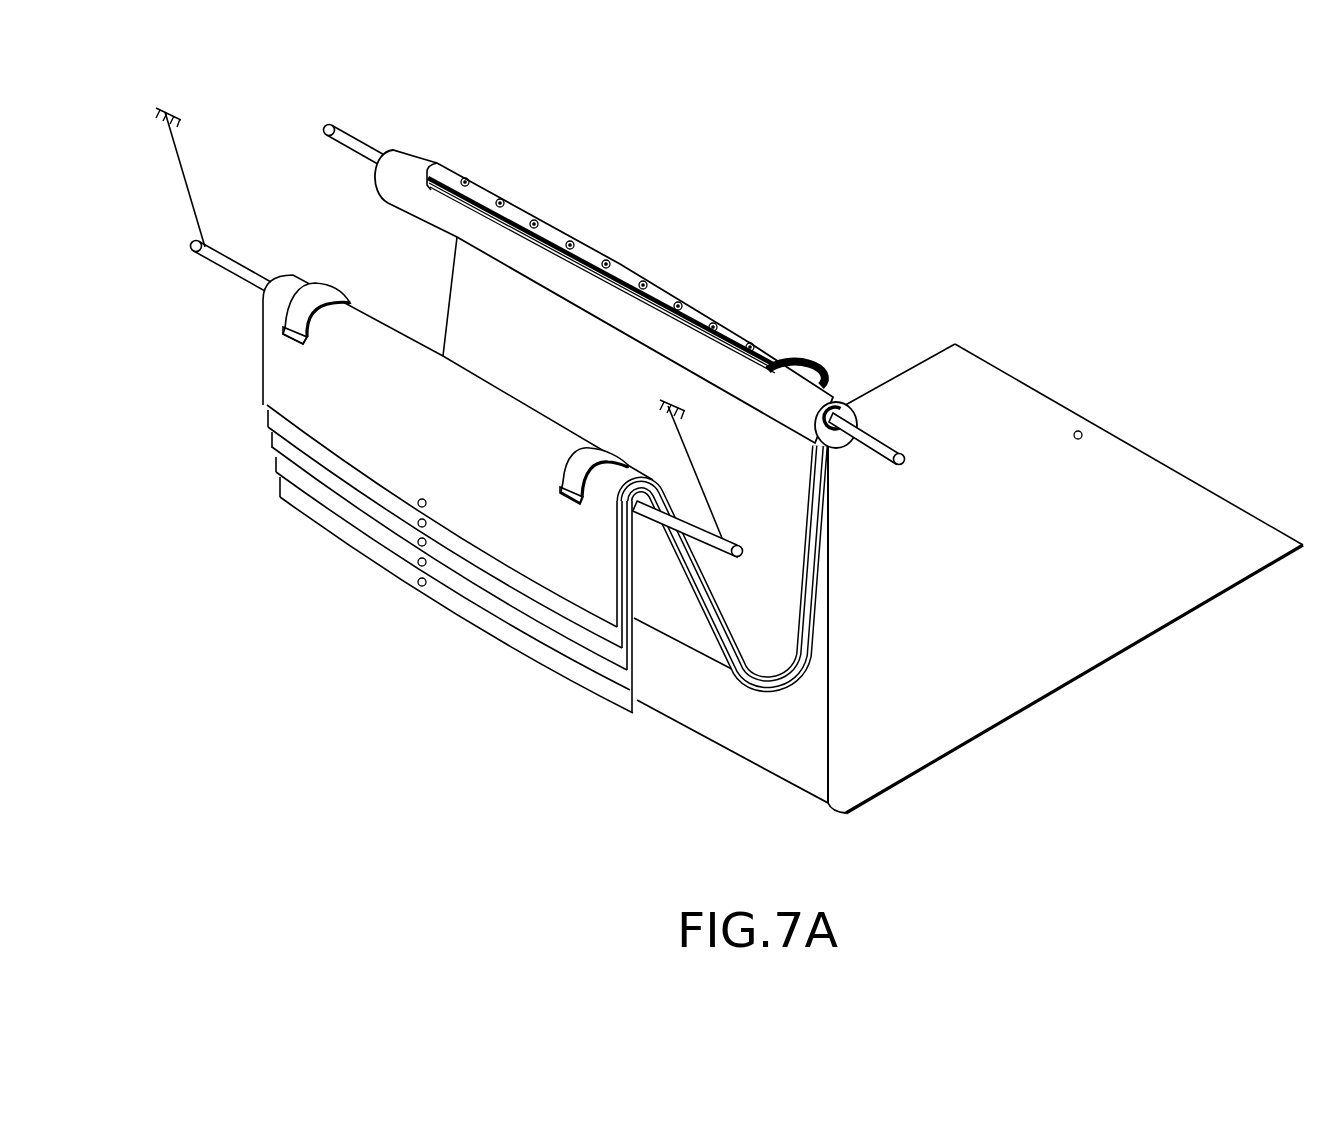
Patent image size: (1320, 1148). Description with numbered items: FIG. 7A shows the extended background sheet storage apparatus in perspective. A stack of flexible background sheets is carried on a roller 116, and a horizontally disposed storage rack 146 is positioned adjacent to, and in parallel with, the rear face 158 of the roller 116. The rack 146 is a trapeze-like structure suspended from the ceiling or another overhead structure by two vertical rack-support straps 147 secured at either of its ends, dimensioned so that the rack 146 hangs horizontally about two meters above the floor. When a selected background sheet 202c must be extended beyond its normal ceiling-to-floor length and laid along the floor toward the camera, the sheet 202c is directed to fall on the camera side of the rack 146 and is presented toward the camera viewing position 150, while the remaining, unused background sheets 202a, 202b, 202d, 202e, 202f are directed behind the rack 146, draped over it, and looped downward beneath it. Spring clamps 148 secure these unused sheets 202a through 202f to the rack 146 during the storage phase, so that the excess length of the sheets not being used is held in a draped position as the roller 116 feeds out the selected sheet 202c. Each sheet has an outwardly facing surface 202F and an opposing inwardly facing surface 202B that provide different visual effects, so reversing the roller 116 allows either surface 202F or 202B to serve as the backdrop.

The roller 116 is at (858, 416).
The storage rack 146 is at (232, 263).
The rack-support straps 147 is at (182, 170).
The spring clamps 148 is at (318, 298).
The camera viewing position 150 is at (882, 560).
The rear face of the roller 158 is at (631, 334).
The background sheet 202b is at (275, 412).
The background sheet 202a is at (273, 438).
The background sheet 202f is at (280, 460).
The background sheet 202e is at (277, 485).
The background sheet 202d is at (282, 507).
The outwardly facing surface 202F is at (670, 600).
The selected background sheet 202c is at (831, 640).
The inwardly facing surface 202B is at (777, 761).